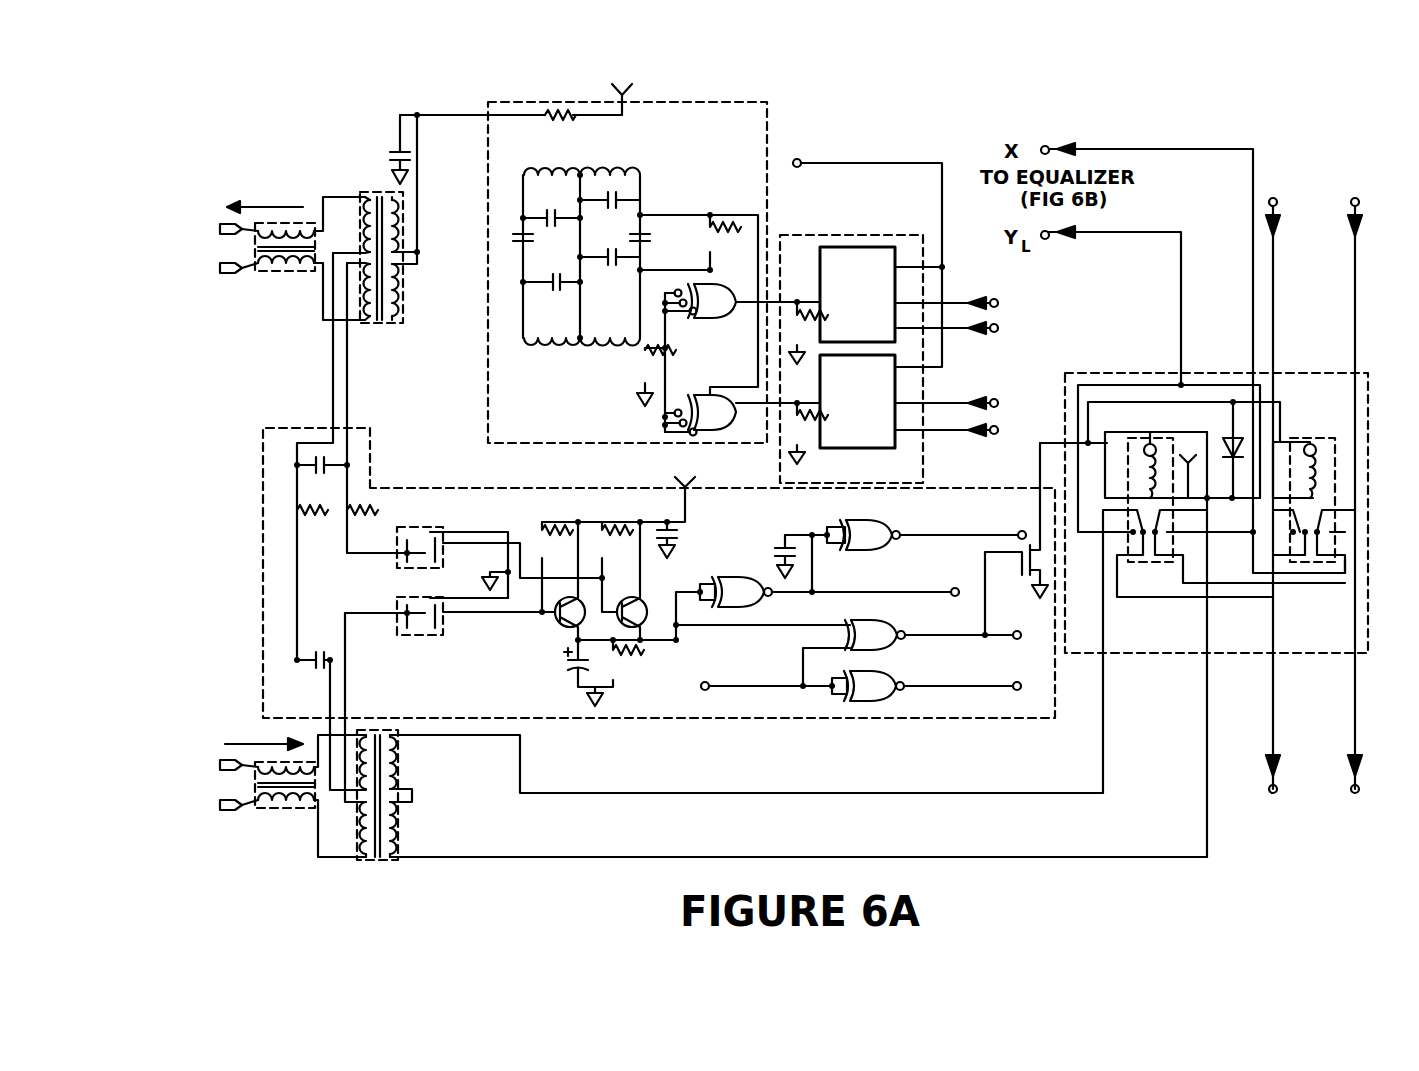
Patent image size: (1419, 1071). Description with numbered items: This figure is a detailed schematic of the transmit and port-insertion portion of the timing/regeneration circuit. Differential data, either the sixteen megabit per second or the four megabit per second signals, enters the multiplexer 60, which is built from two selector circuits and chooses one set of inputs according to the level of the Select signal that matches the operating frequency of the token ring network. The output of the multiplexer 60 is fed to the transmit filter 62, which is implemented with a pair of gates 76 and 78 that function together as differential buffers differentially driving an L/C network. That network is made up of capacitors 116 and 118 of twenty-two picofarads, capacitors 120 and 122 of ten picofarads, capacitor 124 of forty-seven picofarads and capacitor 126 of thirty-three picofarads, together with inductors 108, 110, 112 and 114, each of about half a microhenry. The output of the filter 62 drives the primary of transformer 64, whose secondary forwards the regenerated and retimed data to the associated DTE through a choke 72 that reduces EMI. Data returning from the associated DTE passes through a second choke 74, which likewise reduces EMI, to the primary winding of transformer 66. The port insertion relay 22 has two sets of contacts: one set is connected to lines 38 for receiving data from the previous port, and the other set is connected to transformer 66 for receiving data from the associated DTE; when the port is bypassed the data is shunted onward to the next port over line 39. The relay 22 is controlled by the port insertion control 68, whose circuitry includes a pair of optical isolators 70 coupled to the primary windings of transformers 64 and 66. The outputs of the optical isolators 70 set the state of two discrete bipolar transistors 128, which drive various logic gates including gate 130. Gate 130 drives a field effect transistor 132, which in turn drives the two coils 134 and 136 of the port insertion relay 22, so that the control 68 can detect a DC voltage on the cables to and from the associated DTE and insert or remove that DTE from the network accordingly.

The port insertion relay 22 is at (1375, 394).
The lines 38 is at (1355, 287).
The line 39 is at (1355, 767).
The multiplexer 60 is at (852, 233).
The transmit filter 62 is at (712, 99).
The transformer 64 is at (367, 192).
The transformer 66 is at (366, 862).
The port insertion control 68 is at (638, 722).
The optical isolators 70 is at (432, 536).
The choke 72 is at (270, 282).
The second choke 74 is at (268, 812).
The gate 76 is at (727, 274).
The gate 78 is at (687, 393).
The inductor 108 is at (614, 170).
The inductor 110 is at (535, 172).
The inductor 112 is at (548, 344).
The inductor 114 is at (606, 344).
The capacitor 116 is at (553, 208).
The capacitor 118 is at (553, 291).
The capacitor 120 is at (620, 194).
The capacitor 122 is at (614, 269).
The capacitor 124 is at (643, 230).
The capacitor 126 is at (543, 248).
The bipolar transistors 128 is at (612, 625).
The gate 130 is at (875, 622).
The field effect transistor 132 is at (1028, 576).
The coil 134 is at (1152, 442).
The coil 136 is at (1308, 442).